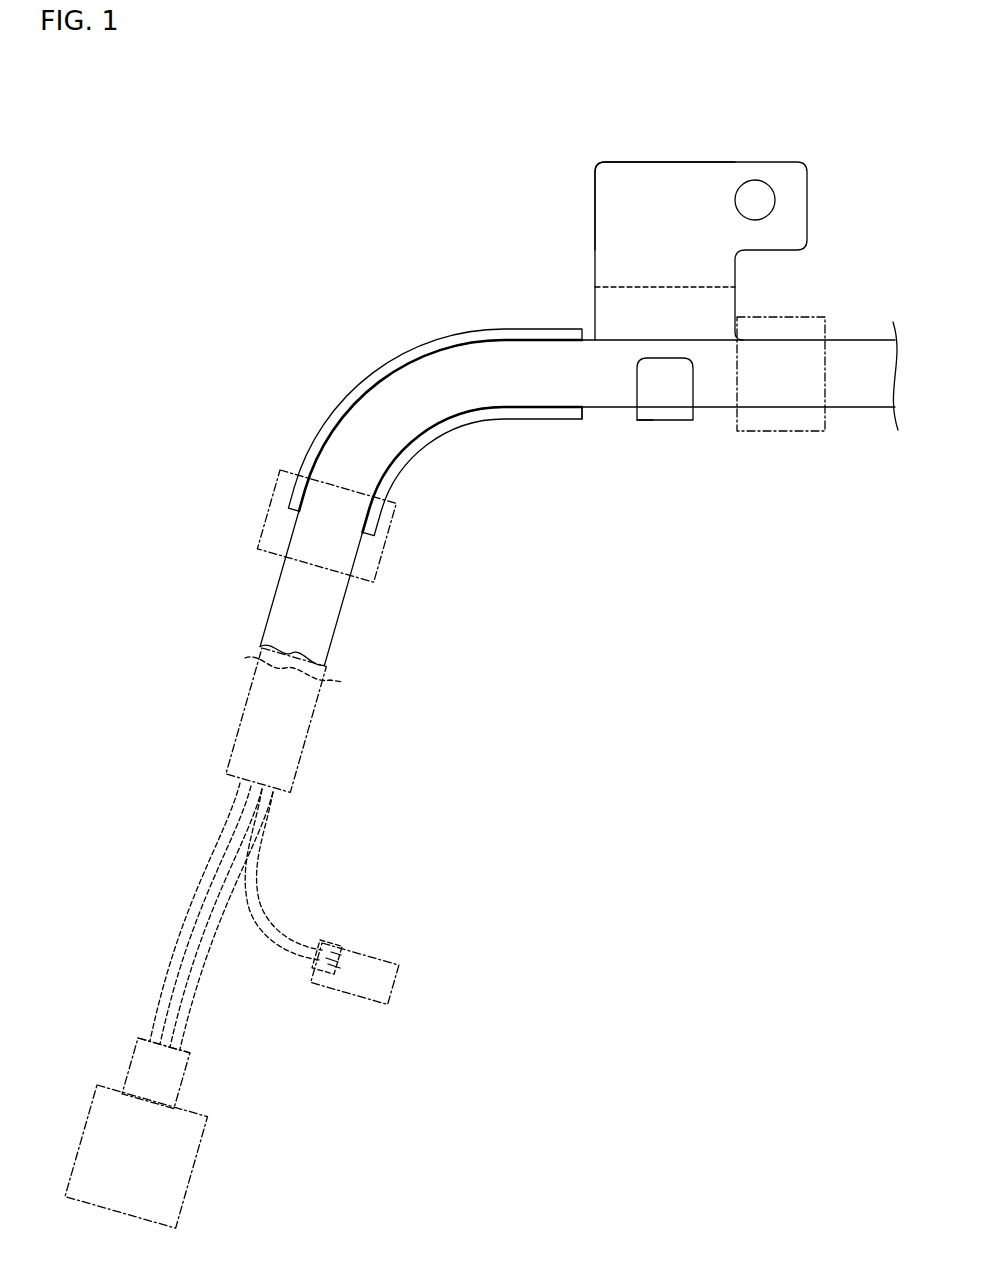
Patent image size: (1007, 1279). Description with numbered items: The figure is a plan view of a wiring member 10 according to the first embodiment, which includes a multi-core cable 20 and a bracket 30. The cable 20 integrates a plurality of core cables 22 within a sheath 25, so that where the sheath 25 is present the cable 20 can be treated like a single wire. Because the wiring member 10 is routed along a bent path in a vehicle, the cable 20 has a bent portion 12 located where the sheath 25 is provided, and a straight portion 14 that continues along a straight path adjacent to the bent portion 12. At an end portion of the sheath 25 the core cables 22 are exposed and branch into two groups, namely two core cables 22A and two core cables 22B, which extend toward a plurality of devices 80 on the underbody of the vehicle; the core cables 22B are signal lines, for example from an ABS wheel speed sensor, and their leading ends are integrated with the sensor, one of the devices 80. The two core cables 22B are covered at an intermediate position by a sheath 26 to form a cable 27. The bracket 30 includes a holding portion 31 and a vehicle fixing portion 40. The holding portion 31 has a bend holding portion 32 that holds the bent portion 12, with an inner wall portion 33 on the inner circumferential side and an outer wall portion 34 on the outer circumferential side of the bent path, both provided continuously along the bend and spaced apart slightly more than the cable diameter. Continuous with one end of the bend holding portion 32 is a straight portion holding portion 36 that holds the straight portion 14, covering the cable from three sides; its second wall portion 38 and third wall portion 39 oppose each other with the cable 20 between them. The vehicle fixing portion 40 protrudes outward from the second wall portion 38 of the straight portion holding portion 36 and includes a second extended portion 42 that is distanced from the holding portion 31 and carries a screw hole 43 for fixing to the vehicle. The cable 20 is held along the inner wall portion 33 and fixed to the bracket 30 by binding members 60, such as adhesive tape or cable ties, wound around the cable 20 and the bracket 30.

The wiring member 10 is at (354, 242).
The bent portion 12 is at (510, 352).
The straight portion 14 is at (858, 348).
The multi-core cable 20 is at (334, 658).
The core cables 22 is at (164, 1045).
The core cables 22A is at (183, 1080).
The core cables 22B is at (343, 952).
The sheath 25 is at (262, 624).
The sheath 26 is at (283, 940).
The cable 27 is at (427, 883).
The bracket 30 is at (459, 331).
The holding portion 31 is at (660, 500).
The bend holding portion 32 is at (566, 426).
The inner wall portion 33 is at (456, 431).
The outer wall portion 34 is at (421, 353).
The straight portion holding portion 36 is at (652, 425).
The second wall portion 38 is at (603, 296).
The third wall portion 39 is at (682, 413).
The vehicle fixing portion 40 is at (700, 161).
The second extended portion 42 is at (643, 166).
The screw hole 43 is at (757, 191).
The binding member 60 is at (790, 433).
The devices 80 is at (352, 998).